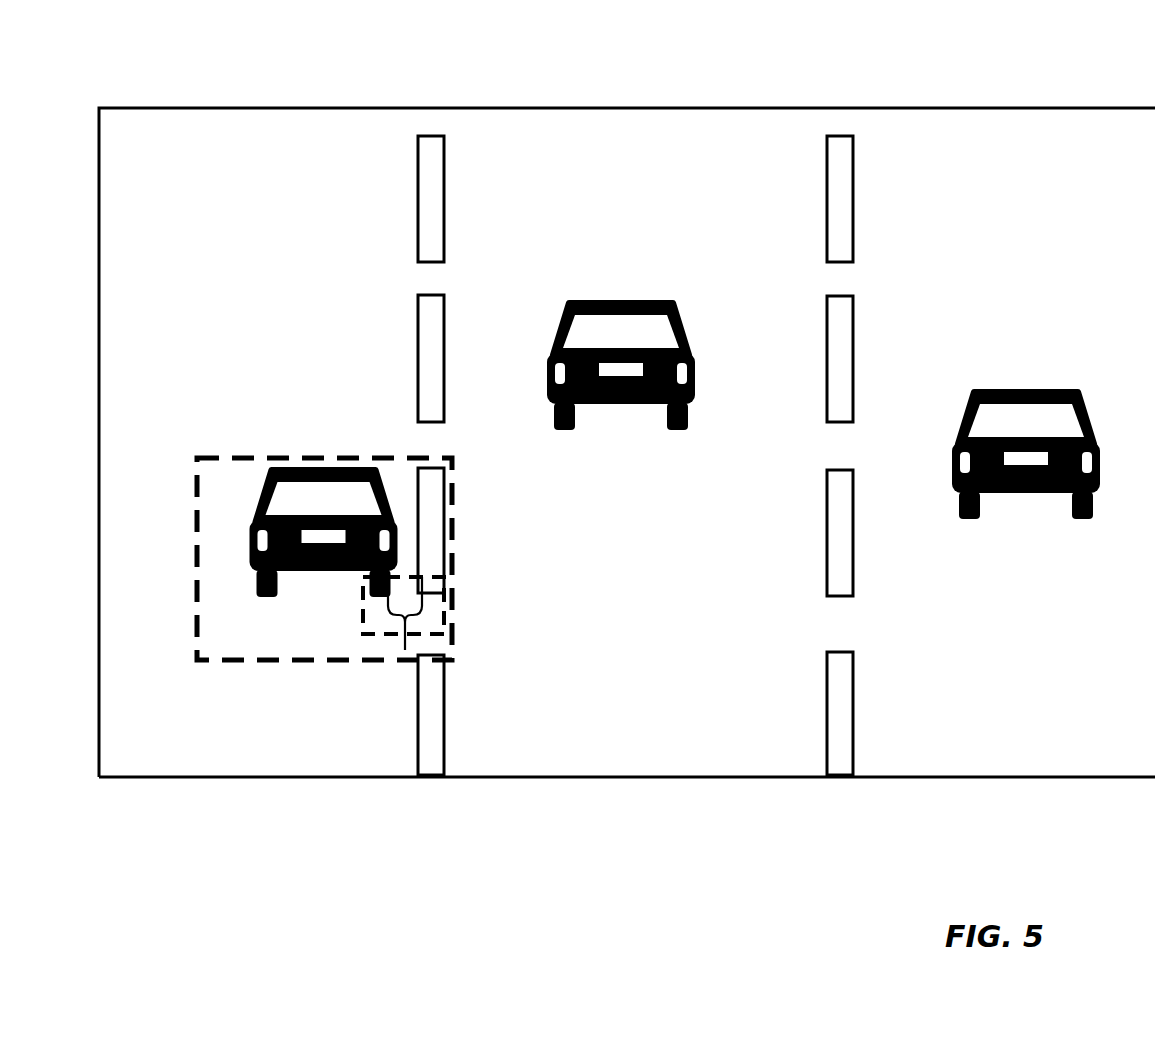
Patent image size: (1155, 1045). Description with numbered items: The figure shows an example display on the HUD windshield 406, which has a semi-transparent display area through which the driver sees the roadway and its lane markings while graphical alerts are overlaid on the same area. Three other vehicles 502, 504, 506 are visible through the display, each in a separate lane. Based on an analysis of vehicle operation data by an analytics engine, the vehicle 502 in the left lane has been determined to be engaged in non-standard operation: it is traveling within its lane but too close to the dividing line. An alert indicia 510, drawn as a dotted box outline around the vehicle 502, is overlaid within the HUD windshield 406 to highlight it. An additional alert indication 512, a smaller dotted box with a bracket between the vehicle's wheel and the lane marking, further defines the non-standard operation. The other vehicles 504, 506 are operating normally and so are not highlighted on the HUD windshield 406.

The HUD windshield 406 is at (650, 108).
The vehicle 502 is at (253, 570).
The vehicle 504 is at (573, 303).
The vehicle 506 is at (997, 392).
The alert indicia 510 is at (196, 457).
The additional alert indication 512 is at (450, 603).